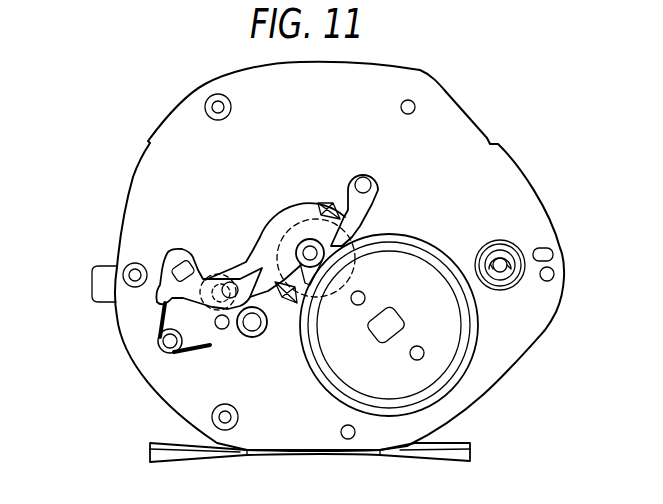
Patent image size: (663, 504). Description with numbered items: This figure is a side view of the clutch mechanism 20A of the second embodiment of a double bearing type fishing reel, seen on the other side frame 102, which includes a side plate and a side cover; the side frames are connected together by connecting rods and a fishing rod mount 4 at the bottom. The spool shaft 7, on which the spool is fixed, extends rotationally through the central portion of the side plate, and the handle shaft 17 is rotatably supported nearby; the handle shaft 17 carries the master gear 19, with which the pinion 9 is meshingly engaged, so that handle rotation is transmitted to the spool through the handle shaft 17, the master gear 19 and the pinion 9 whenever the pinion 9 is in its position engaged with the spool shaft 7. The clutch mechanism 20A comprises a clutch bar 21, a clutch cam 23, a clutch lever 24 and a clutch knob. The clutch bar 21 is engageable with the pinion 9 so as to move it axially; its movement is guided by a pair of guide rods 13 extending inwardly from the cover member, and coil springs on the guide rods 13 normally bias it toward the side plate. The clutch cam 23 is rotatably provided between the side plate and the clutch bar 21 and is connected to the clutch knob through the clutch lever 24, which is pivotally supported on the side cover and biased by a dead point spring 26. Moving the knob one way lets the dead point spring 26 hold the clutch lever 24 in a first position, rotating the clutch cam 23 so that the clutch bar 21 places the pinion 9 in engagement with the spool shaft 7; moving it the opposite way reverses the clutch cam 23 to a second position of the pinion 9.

The side frame 102 is at (450, 90).
The master gear 19 is at (479, 321).
The handle shaft 17 is at (391, 327).
The spool shaft 7 is at (313, 257).
The clutch cam 23 is at (290, 208).
The pinion 9 is at (301, 243).
The clutch bar 21 is at (354, 172).
The clutch mechanism 20A is at (385, 193).
The clutch lever 24 is at (199, 269).
The guide rods 13 is at (255, 325).
The dead point spring 26 is at (178, 356).
The fishing rod mount 4 is at (465, 455).